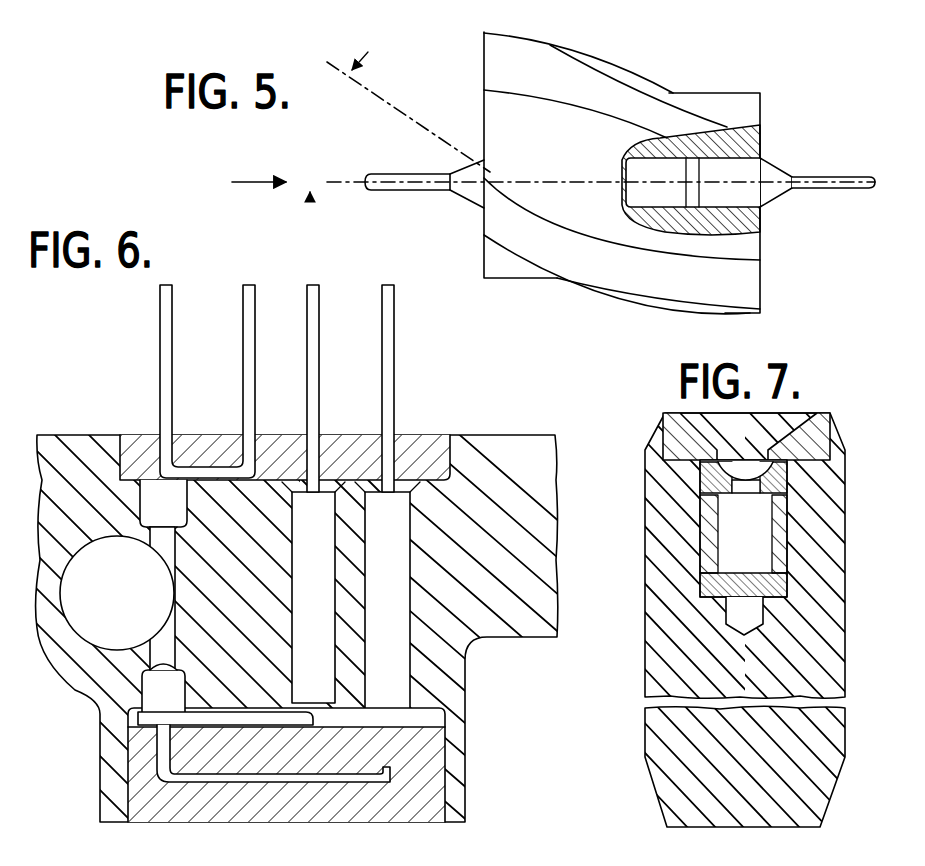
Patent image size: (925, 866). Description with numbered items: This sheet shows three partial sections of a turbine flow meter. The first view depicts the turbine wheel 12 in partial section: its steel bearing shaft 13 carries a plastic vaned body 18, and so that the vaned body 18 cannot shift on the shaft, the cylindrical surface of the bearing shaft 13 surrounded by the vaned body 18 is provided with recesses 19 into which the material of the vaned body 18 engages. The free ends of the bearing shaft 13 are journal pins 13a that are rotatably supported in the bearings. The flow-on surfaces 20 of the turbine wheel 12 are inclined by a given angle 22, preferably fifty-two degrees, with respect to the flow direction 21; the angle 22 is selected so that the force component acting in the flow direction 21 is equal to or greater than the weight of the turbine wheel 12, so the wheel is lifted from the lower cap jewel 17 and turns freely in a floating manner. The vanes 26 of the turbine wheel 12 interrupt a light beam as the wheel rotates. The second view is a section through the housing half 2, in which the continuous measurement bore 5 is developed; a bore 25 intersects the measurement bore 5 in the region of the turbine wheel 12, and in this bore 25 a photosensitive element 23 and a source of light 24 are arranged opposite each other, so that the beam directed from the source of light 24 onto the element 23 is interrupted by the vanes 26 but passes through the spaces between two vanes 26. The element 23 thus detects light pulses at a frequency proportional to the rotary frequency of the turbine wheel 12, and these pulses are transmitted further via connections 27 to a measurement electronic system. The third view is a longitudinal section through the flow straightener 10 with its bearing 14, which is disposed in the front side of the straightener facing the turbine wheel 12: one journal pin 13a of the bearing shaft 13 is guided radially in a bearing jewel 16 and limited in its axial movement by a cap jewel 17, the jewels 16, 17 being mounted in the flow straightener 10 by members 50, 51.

In FIG. 6, the housing half 2 is at (495, 472).
In FIG. 6, the measurement bore 5 is at (78, 583).
In FIG. 7, the flow straightener 10 is at (805, 577).
In FIG. 5, the turbine wheel 12 is at (688, 52).
In FIG. 5, the bearing shaft 13 is at (745, 193).
In FIG. 5, the journal pin 13a is at (828, 177).
In FIG. 7, the bearing 14 is at (825, 402).
In FIG. 7, the bearing jewel 16 is at (710, 478).
In FIG. 7, the cap jewel 17 is at (715, 587).
In FIG. 5, the vaned body 18 is at (723, 100).
In FIG. 5, the recesses 19 is at (752, 170).
In FIG. 5, the flow-on surfaces 20 is at (484, 70).
In FIG. 5, the flow direction 21 is at (266, 162).
In FIG. 5, the angle 22 is at (338, 148).
In FIG. 6, the photosensitive element 23 is at (155, 497).
In FIG. 6, the source of light 24 is at (153, 680).
In FIG. 6, the bore 25 is at (175, 547).
In FIG. 5, the vanes 26 is at (726, 316).
In FIG. 6, the connections 27 is at (237, 282).
In FIG. 7, the member 50 is at (830, 440).
In FIG. 7, the member 51 is at (780, 528).